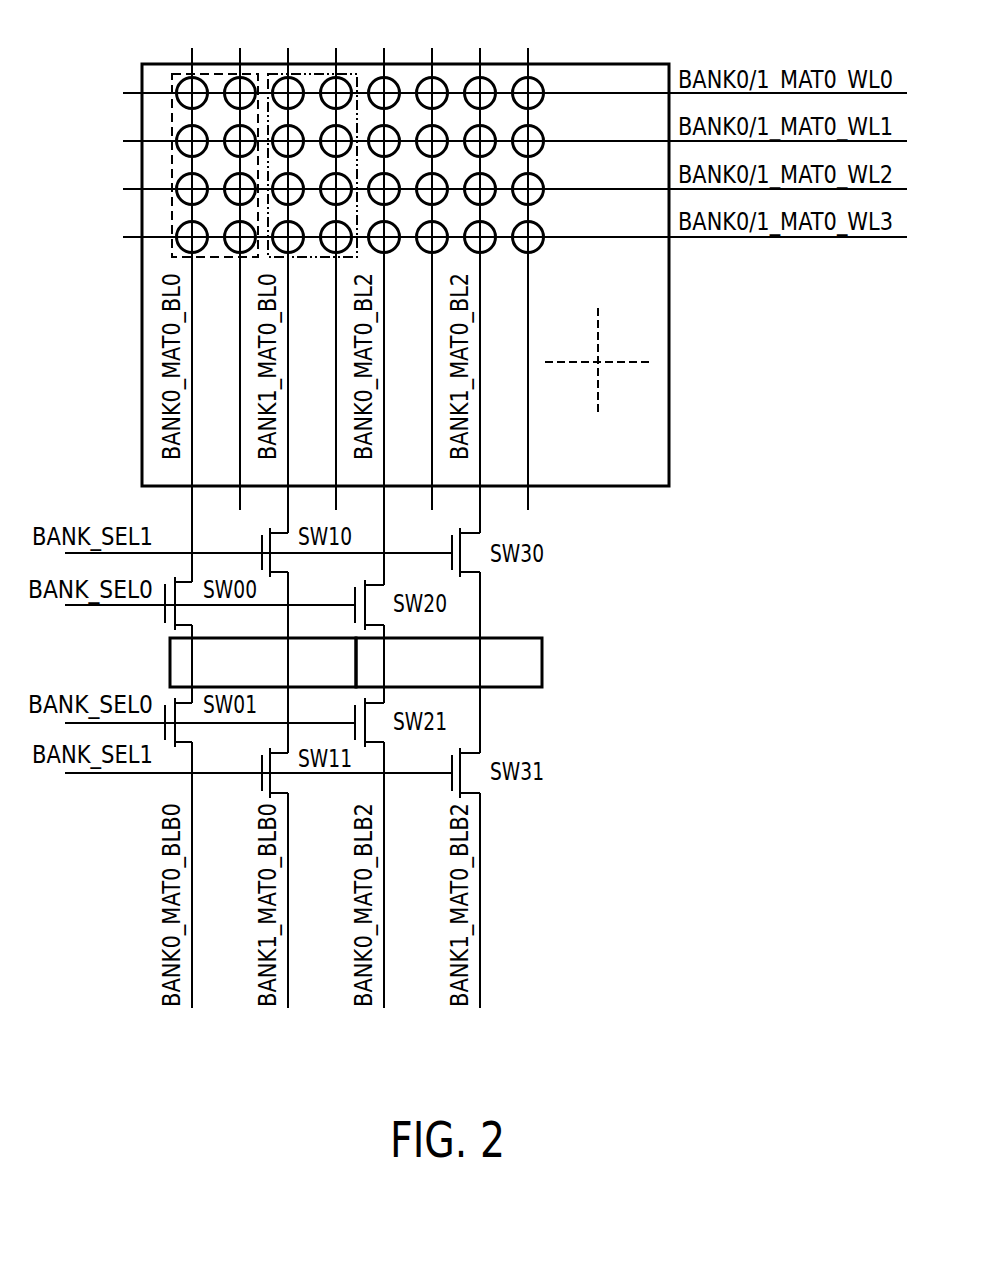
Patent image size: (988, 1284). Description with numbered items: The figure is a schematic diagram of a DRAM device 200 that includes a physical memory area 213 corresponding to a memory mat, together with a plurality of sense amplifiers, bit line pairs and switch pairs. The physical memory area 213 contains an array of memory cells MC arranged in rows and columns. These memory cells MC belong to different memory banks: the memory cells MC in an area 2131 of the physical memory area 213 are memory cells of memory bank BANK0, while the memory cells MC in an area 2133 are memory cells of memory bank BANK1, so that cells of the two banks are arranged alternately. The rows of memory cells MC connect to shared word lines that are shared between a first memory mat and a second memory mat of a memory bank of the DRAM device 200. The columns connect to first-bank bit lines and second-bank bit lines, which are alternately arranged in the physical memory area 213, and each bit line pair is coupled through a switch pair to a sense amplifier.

The DRAM device 200 is at (757, 1026).
The physical memory area 213 is at (613, 487).
The area 2131 is at (222, 72).
The area 2133 is at (312, 72).
The memory cell MC is at (184, 232).